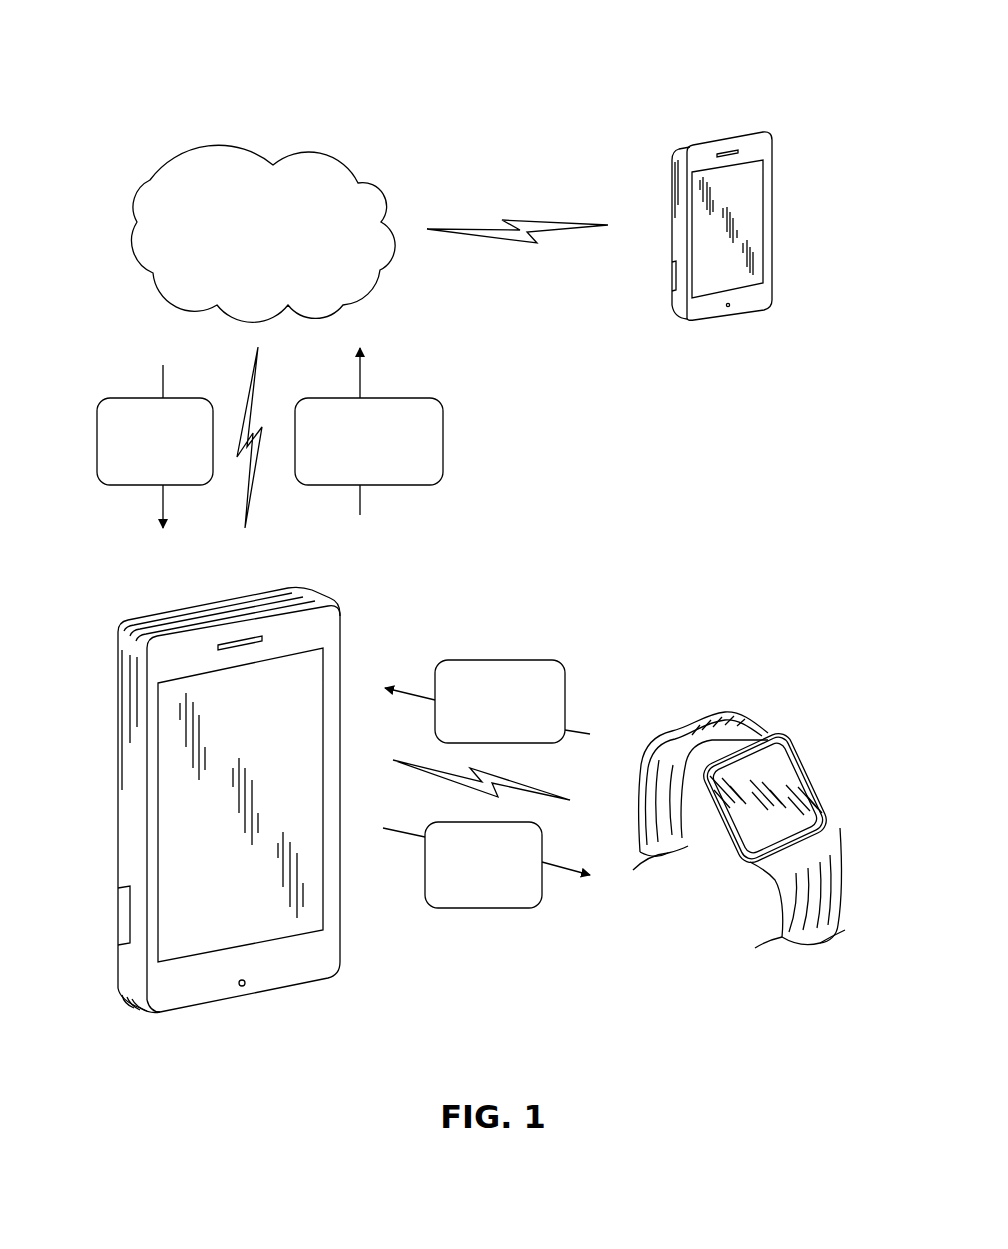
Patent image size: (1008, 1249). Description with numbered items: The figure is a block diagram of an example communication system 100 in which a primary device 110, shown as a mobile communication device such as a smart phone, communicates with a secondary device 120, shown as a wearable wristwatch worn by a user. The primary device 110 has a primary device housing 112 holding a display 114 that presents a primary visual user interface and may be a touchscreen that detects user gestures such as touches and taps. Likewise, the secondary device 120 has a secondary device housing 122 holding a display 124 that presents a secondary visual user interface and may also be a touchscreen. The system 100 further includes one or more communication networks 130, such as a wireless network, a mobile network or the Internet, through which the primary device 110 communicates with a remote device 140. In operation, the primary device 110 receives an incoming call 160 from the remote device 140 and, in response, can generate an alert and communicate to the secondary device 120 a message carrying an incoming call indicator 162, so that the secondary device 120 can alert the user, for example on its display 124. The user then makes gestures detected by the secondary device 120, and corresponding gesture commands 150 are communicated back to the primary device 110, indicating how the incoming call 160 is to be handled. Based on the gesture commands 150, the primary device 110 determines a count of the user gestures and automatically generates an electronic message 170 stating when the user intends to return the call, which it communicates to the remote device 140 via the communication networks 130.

The communication system 100 is at (441, 33).
The primary device 110 is at (368, 622).
The primary device housing 112 is at (117, 703).
The display 114 is at (245, 923).
The secondary device 120 is at (830, 752).
The secondary device housing 122 is at (723, 828).
The display 124 is at (778, 760).
The communication network(s) 130 is at (264, 233).
The remote device 140 is at (773, 158).
The gesture command(s) 150 is at (487, 701).
The incoming call 160 is at (155, 446).
The incoming call indicator 162 is at (486, 865).
The electronic message 170 is at (369, 431).